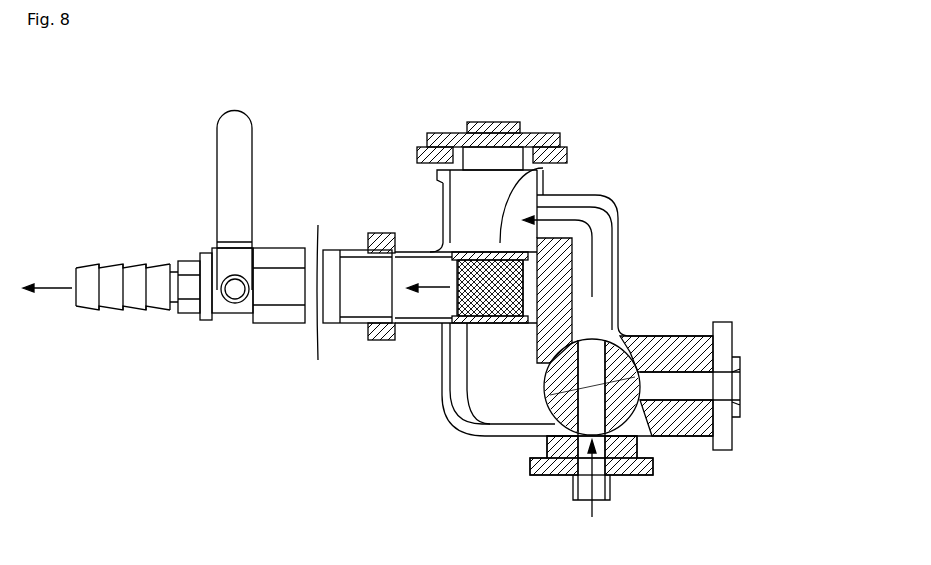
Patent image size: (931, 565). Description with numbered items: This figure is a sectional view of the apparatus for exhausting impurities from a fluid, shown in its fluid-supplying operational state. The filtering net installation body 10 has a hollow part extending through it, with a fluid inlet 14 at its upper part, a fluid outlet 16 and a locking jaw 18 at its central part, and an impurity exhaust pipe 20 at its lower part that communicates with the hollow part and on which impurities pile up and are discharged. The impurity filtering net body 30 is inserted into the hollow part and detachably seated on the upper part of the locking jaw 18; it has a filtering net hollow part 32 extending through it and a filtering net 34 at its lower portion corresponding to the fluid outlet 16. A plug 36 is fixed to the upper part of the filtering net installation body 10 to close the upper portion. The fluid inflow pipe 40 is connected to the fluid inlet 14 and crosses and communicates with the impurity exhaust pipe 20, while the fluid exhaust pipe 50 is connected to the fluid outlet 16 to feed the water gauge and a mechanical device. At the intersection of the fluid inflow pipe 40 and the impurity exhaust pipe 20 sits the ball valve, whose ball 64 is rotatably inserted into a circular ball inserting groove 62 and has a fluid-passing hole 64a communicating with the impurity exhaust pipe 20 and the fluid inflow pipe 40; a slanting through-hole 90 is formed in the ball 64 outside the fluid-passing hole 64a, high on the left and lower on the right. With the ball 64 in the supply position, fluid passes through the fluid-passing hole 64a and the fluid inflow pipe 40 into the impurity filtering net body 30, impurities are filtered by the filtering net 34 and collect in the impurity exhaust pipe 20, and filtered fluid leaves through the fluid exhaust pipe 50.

The filtering net installation body 10 is at (430, 194).
The fluid outlet 16 is at (397, 235).
The plug 36 is at (522, 137).
The filtering net hollow part 32 is at (529, 261).
The filtering net 34 is at (455, 305).
The fluid inlet 14 is at (608, 200).
The impurity filtering net body 30 is at (572, 224).
The fluid inflow pipe 40 is at (620, 270).
The ball 64 is at (630, 413).
The fluid-passing hole 64a is at (620, 303).
The slanting through-hole 90 is at (630, 335).
The impurity exhaust pipe 20 is at (465, 420).
The locking jaw 18 is at (450, 410).
The ball inserting groove 62 is at (537, 447).
The fluid exhaust pipe 50 is at (372, 340).